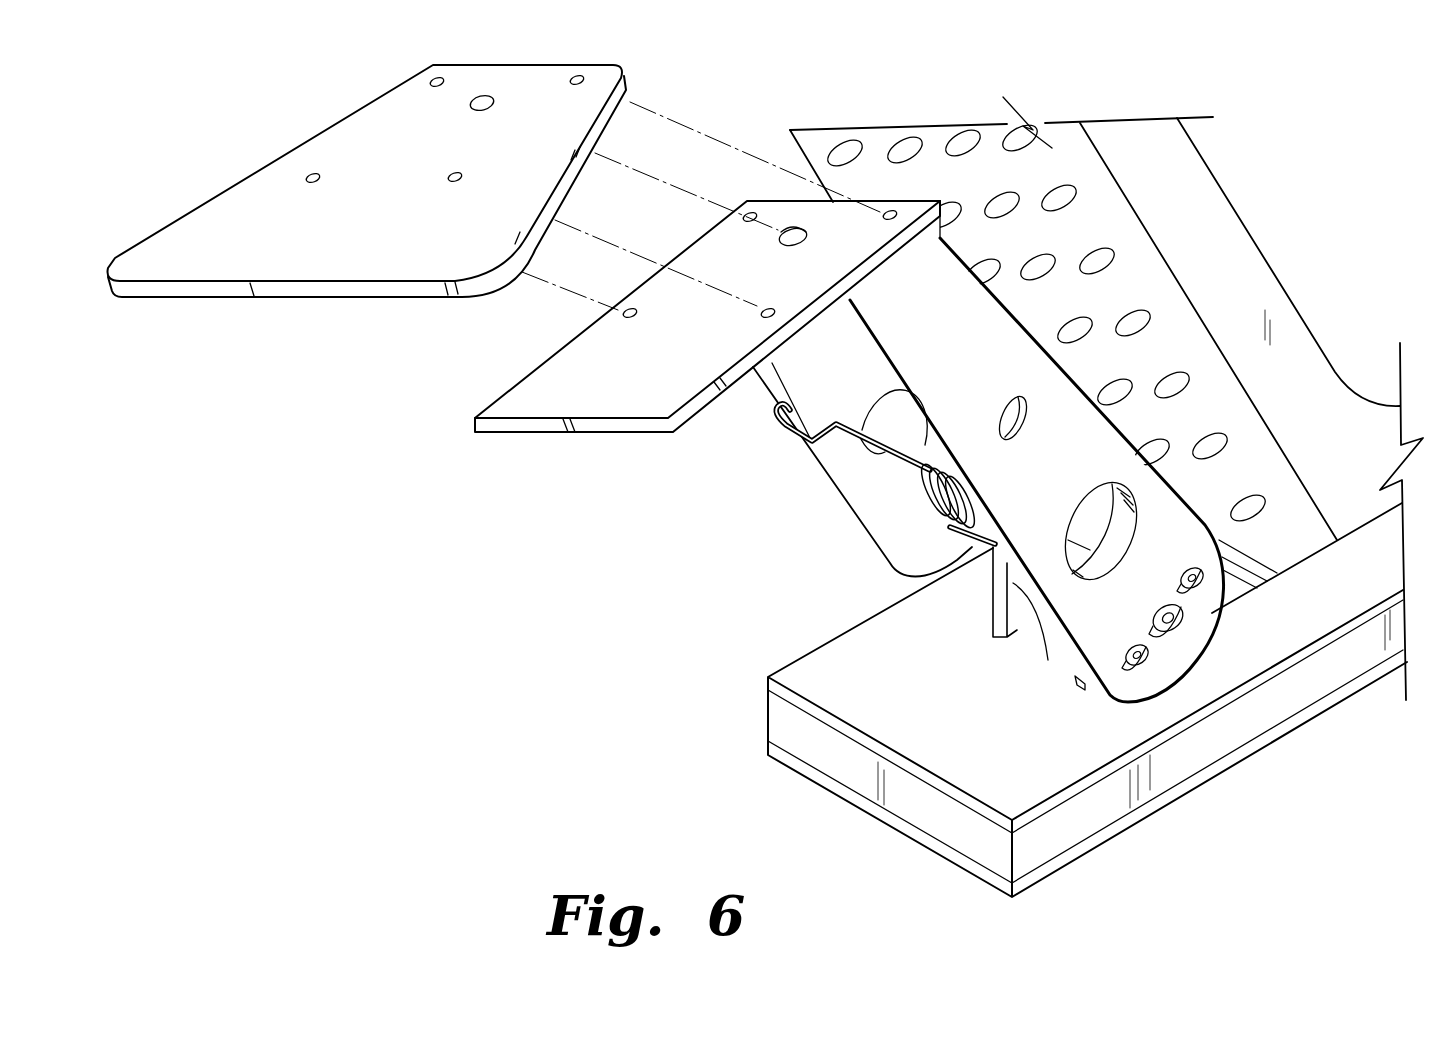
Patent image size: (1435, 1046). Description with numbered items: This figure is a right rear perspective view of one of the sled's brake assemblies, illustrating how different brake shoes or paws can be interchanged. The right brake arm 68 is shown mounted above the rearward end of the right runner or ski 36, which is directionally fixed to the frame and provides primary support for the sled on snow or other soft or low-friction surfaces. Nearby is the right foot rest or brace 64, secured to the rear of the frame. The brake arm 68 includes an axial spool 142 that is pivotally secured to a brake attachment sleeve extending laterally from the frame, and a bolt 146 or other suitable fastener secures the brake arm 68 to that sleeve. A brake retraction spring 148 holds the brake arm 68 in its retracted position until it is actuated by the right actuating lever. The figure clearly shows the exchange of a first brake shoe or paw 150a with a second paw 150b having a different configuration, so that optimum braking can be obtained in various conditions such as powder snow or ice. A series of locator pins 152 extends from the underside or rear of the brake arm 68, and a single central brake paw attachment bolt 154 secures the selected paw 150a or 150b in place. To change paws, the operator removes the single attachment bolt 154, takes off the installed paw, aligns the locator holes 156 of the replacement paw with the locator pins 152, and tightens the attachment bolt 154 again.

The right runner or ski 36 is at (1233, 762).
The right foot rest or brace 64 is at (1165, 229).
The right brake arm 68 is at (943, 349).
The axial spool 142 is at (1042, 640).
The bolt 146 is at (1185, 624).
The brake retraction spring 148 is at (935, 530).
The first brake shoe or paw 150a is at (607, 433).
The second brake shoe or paw 150b is at (250, 178).
The locator pins 152 is at (883, 216).
The brake paw attachment bolt 154 is at (793, 228).
The locator holes 156 is at (448, 80).